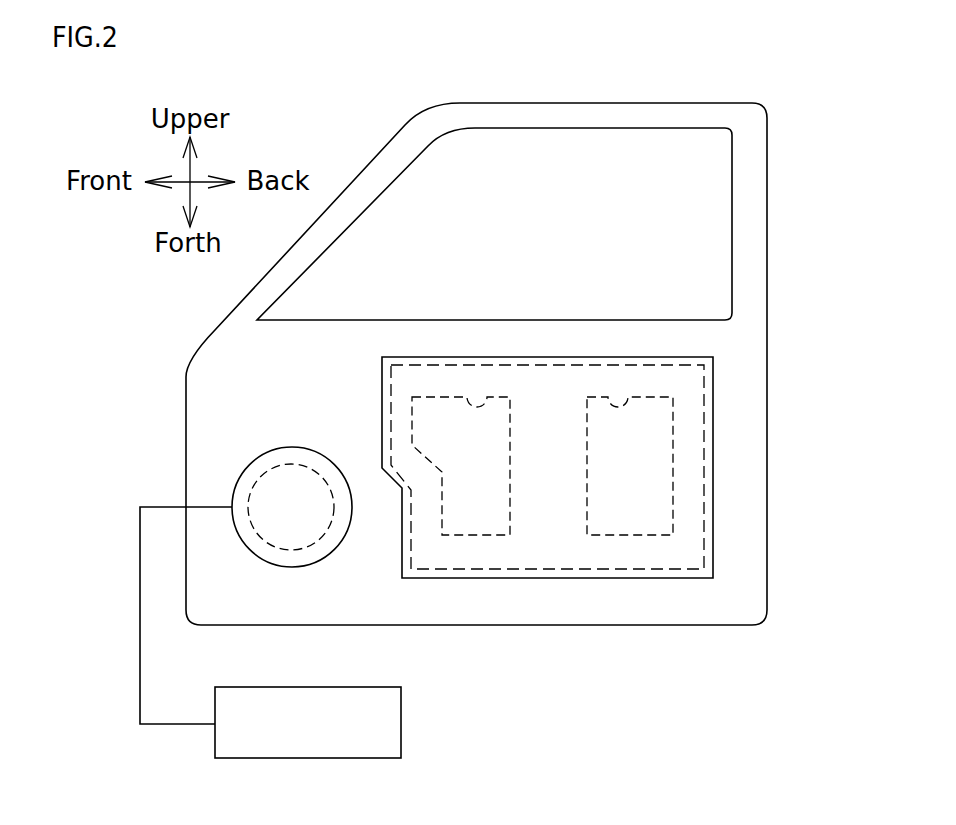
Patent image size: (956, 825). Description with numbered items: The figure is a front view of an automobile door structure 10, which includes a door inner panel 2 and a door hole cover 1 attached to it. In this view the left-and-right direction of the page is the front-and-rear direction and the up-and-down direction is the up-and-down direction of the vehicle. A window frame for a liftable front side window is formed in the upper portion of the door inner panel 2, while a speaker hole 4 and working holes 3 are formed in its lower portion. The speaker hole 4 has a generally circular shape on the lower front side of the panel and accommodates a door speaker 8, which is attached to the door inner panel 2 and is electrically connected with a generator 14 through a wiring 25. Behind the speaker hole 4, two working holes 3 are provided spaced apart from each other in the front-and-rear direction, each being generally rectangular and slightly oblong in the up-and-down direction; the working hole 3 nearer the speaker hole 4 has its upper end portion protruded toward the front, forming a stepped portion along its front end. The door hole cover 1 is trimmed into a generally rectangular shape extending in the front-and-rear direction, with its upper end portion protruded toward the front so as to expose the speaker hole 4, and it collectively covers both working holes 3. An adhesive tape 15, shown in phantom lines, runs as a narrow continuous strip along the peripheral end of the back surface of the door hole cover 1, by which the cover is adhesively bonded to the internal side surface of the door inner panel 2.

The door structure 10 is at (637, 727).
The door inner panel 2 is at (767, 362).
The door hole cover 1 is at (714, 436).
The adhesive tape 15 is at (540, 568).
The working hole 3 is at (616, 409).
The door speaker 8 is at (240, 478).
The speaker hole 4 is at (297, 467).
The wiring 25 is at (140, 640).
The generator 14 is at (401, 720).